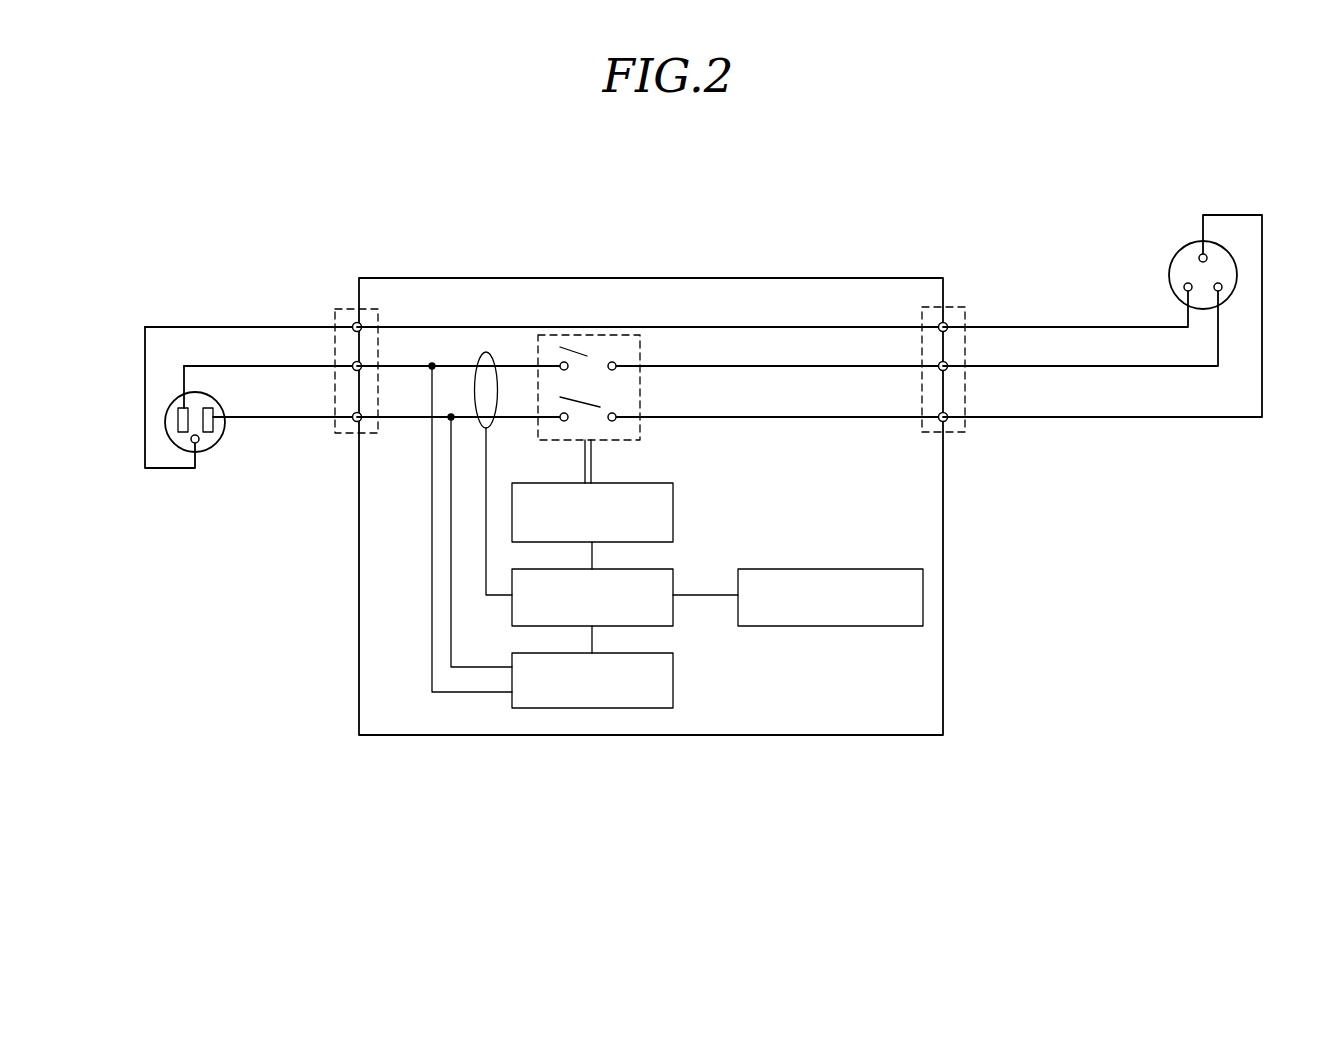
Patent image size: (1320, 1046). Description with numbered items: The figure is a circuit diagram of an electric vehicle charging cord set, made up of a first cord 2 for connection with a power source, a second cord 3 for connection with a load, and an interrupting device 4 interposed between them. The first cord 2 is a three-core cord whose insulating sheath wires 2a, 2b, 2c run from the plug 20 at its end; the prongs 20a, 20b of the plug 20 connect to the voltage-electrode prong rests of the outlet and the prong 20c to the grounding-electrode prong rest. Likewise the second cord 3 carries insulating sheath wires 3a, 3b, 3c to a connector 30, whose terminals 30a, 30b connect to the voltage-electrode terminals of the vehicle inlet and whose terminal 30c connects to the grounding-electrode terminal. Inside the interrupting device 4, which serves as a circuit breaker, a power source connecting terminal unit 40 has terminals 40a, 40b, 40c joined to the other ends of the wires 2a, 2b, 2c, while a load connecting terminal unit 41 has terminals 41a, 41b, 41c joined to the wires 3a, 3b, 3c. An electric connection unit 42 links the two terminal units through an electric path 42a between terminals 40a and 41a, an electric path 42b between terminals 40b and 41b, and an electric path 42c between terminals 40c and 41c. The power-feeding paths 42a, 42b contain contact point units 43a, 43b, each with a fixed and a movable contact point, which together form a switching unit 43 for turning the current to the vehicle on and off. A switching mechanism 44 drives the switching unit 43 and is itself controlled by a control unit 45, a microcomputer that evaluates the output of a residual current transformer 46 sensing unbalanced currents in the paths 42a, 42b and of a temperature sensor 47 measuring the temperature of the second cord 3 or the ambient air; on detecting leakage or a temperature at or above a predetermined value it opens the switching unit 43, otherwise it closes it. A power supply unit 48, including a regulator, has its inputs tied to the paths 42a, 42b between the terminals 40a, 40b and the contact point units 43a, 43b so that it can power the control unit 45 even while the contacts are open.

The first cord 2 is at (188, 265).
The insulating sheath wire 2a is at (245, 417).
The insulating sheath wire 2b is at (260, 366).
The insulating sheath wire 2c is at (282, 327).
The plug 20 is at (207, 452).
The prong 20a is at (212, 427).
The prong 20b is at (177, 421).
The prong 20c is at (192, 445).
The second cord 3 is at (1037, 260).
The insulating sheath wire 3a is at (1093, 415).
The insulating sheath wire 3b is at (1067, 365).
The insulating sheath wire 3c is at (1035, 325).
The connector 30 is at (1180, 248).
The terminal 30a is at (1208, 256).
The terminal 30b is at (1222, 288).
The terminal 30c is at (1193, 285).
The interrupting device 4 is at (753, 278).
The terminal unit 40 is at (375, 310).
The terminal 40a is at (360, 420).
The terminal 40b is at (354, 370).
The terminal 40c is at (355, 323).
The terminal unit 41 is at (930, 307).
The terminal 41a is at (948, 420).
The terminal 41b is at (948, 370).
The terminal 41c is at (946, 323).
The electric connection unit 42 is at (752, 486).
The electric path 42a is at (760, 417).
The electric path 42b is at (817, 366).
The electric path 42c is at (865, 327).
The switching unit 43 is at (572, 335).
The contact point unit 43a is at (592, 403).
The contact point unit 43b is at (587, 356).
The switching mechanism 44 is at (673, 503).
The control unit 45 is at (673, 600).
The residual current transformer 46 is at (486, 352).
The temperature sensor 47 is at (855, 626).
The power supply unit 48 is at (673, 675).